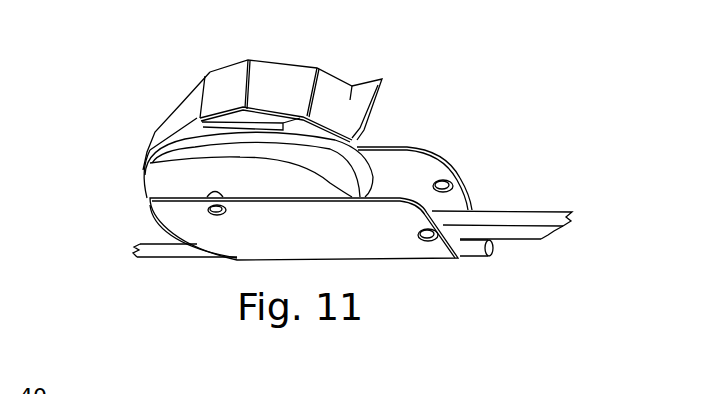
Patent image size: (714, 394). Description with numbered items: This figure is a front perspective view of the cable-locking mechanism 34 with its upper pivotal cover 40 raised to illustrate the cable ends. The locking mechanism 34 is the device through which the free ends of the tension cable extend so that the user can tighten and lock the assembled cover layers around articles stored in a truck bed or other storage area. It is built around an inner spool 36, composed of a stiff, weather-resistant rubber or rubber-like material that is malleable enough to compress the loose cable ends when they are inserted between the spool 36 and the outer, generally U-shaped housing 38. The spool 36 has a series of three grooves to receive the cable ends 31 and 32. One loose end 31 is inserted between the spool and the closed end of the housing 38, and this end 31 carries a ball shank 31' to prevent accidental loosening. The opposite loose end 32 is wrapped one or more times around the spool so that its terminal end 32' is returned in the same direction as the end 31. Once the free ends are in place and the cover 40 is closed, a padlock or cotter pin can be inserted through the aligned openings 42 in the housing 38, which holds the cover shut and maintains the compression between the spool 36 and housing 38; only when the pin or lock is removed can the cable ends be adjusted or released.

The cable free end 31 is at (173, 293).
The ball shank 31' is at (514, 294).
The cable free end 32 is at (502, 151).
The terminal end 32' is at (549, 275).
The locking mechanism 34 is at (340, 240).
The inner spool 36 is at (185, 179).
The housing 38 is at (185, 225).
The upper pivotal cover 40 is at (283, 67).
The aligned openings 42 is at (438, 181).